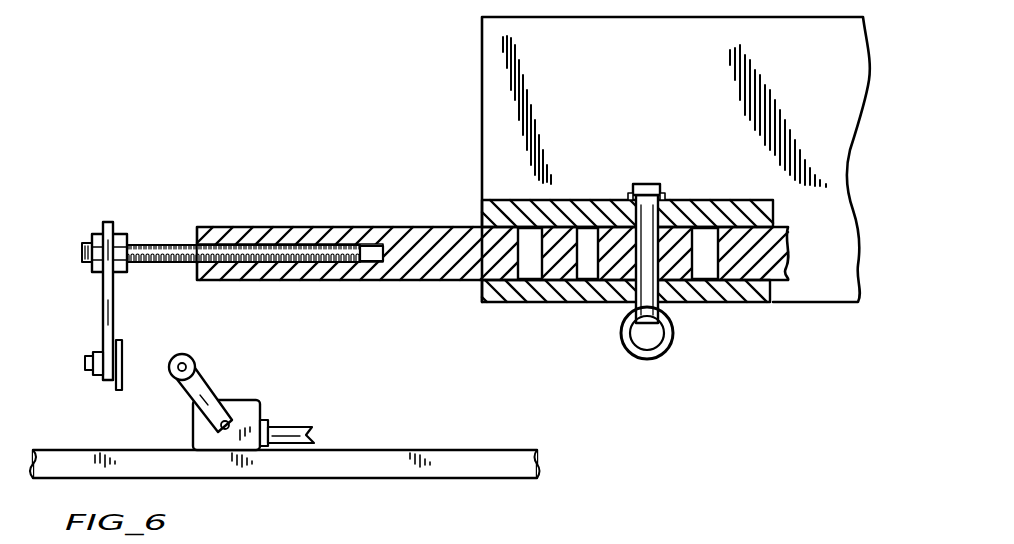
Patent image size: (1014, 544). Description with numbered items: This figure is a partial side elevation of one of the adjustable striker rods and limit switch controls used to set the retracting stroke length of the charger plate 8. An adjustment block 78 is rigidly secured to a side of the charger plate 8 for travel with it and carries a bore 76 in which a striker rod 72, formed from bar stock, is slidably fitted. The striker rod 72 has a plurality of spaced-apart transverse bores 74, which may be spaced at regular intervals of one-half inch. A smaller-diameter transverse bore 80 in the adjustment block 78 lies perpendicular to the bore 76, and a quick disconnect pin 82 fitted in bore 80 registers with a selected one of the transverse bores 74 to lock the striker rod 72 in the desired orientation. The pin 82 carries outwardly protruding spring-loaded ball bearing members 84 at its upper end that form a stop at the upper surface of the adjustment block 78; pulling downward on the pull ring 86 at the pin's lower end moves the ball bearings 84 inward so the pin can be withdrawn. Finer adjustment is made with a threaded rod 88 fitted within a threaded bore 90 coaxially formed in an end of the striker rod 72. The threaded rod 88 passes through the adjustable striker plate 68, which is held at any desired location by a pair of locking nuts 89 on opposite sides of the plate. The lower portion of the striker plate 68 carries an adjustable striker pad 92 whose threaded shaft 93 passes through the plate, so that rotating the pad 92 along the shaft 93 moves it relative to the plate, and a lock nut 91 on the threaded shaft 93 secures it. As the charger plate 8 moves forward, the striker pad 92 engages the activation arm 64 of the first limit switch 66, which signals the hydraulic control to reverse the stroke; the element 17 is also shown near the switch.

The charger plate 8 is at (487, 17).
The shaft 17 is at (295, 428).
The activation arm 64 is at (194, 376).
The first limit switch 66 is at (246, 400).
The adjustable striker plate 68 is at (103, 310).
The striker rod 72 is at (438, 227).
The transverse bores 74 is at (530, 280).
The bore 76 is at (770, 222).
The adjustment block 78 is at (718, 200).
The transverse bore 80 is at (637, 222).
The quick disconnect pin 82 is at (650, 184).
The spring-loaded ball bearing members 84 is at (632, 195).
The pull ring 86 is at (647, 359).
The threaded rod 88 is at (178, 243).
The locking nuts 89 is at (112, 233).
The threaded bore 90 is at (368, 227).
The lock nut 91 is at (104, 381).
The adjustable striker pad 92 is at (122, 345).
The threaded shaft 93 is at (85, 364).